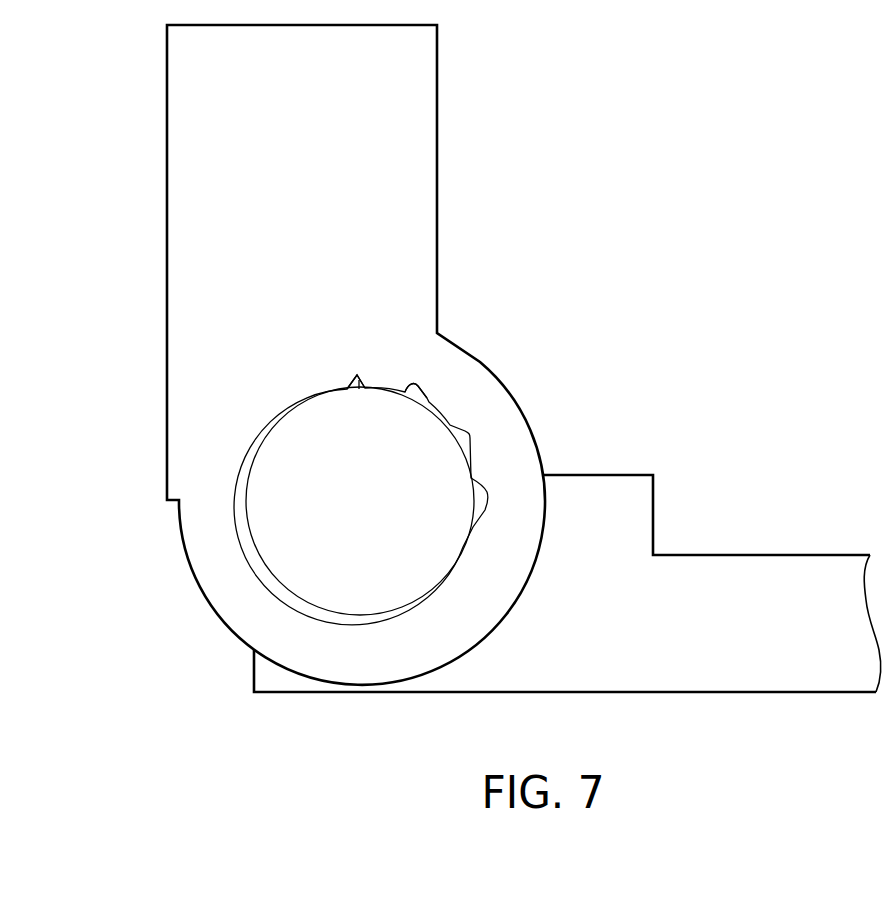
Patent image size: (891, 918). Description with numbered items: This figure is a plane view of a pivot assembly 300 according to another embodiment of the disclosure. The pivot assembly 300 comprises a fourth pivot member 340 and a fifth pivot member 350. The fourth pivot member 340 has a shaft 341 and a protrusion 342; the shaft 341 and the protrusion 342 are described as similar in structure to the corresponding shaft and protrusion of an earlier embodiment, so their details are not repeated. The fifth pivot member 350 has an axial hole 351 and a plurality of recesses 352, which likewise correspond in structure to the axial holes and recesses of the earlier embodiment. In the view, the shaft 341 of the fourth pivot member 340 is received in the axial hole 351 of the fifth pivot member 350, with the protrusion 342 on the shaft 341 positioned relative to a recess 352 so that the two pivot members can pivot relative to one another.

The pivot assembly 300 is at (686, 95).
The fourth pivot member 340 is at (387, 174).
The shaft 341 is at (291, 410).
The protrusion 342 is at (427, 398).
The fifth pivot member 350 is at (736, 607).
The axial hole 351 is at (327, 482).
The recess 352 is at (357, 378).